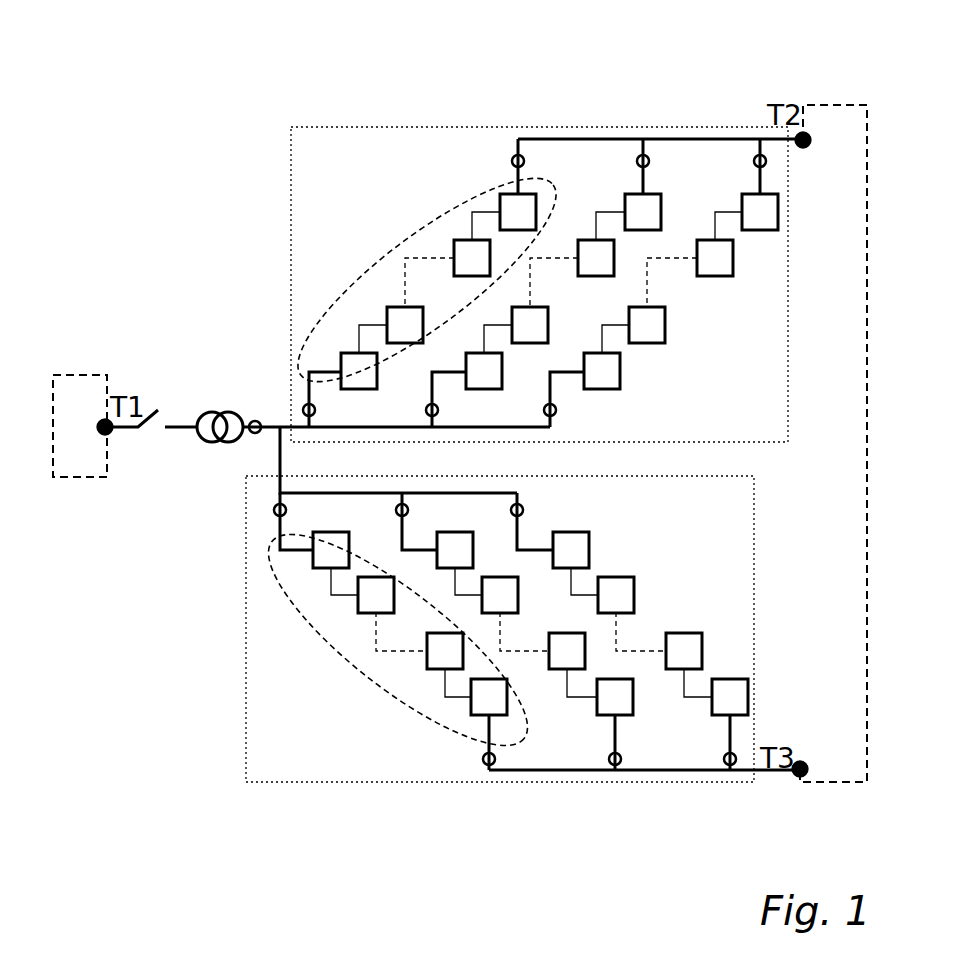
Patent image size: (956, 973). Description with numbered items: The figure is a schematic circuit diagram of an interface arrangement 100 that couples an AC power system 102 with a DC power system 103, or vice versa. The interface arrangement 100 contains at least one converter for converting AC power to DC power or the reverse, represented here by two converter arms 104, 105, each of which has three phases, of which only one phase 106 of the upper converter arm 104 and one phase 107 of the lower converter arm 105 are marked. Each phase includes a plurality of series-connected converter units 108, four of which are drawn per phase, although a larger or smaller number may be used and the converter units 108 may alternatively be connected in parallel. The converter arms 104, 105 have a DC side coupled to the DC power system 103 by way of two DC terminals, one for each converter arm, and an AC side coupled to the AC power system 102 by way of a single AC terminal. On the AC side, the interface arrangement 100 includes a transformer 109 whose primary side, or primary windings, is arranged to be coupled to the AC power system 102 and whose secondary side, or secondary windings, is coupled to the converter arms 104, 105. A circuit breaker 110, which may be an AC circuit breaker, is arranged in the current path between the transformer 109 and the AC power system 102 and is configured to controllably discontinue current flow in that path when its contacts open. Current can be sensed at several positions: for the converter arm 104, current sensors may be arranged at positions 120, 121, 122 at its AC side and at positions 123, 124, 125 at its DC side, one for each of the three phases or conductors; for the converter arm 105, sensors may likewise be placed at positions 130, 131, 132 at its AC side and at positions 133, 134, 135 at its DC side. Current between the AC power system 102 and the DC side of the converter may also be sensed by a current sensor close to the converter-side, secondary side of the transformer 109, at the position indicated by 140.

The interface arrangement 100 is at (172, 283).
The AC power system 102 is at (63, 375).
The DC power system 103 is at (838, 105).
The converter arm 104 is at (373, 127).
The converter arm 105 is at (246, 665).
The phase 106 is at (425, 237).
The phase 107 is at (332, 663).
The converter unit 108 is at (387, 318).
The transformer 109 is at (226, 412).
The circuit breaker 110 is at (153, 433).
The current sensor position 120 is at (318, 410).
The current sensor position 121 is at (441, 410).
The current sensor position 122 is at (559, 410).
The current sensor position 123 is at (510, 161).
The current sensor position 124 is at (635, 161).
The current sensor position 125 is at (752, 161).
The current sensor position 130 is at (272, 510).
The current sensor position 131 is at (394, 510).
The current sensor position 132 is at (509, 510).
The current sensor position 133 is at (481, 759).
The current sensor position 134 is at (607, 759).
The current sensor position 135 is at (722, 759).
The current sensor position 140 is at (255, 421).